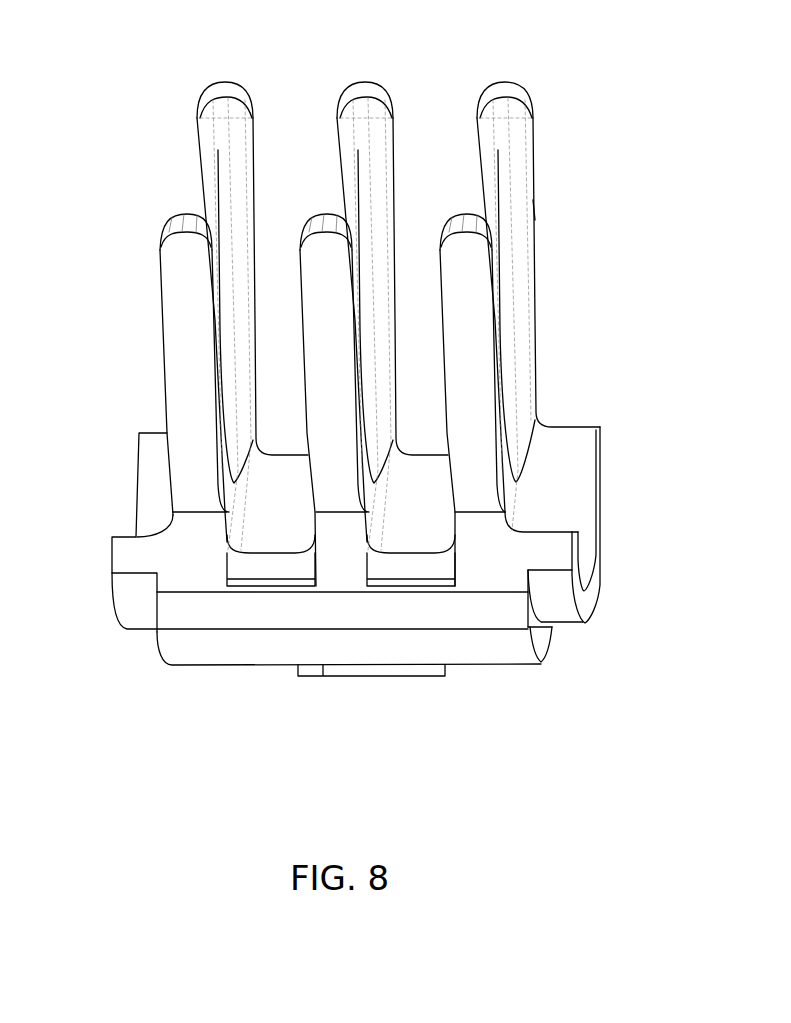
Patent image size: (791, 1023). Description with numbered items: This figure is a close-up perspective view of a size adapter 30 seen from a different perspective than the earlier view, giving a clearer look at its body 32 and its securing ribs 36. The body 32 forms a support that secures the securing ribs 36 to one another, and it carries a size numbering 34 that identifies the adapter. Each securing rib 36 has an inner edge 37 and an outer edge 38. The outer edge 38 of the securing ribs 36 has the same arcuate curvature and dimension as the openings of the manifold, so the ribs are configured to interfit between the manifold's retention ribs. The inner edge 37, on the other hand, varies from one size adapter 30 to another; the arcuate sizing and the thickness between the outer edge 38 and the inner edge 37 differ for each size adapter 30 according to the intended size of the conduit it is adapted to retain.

The size adapter 30 is at (114, 708).
The body 32 is at (432, 562).
The size numbering 34 is at (468, 667).
The securing rib 36 is at (533, 210).
The inner edge 37 is at (240, 152).
The outer edge 38 is at (187, 308).